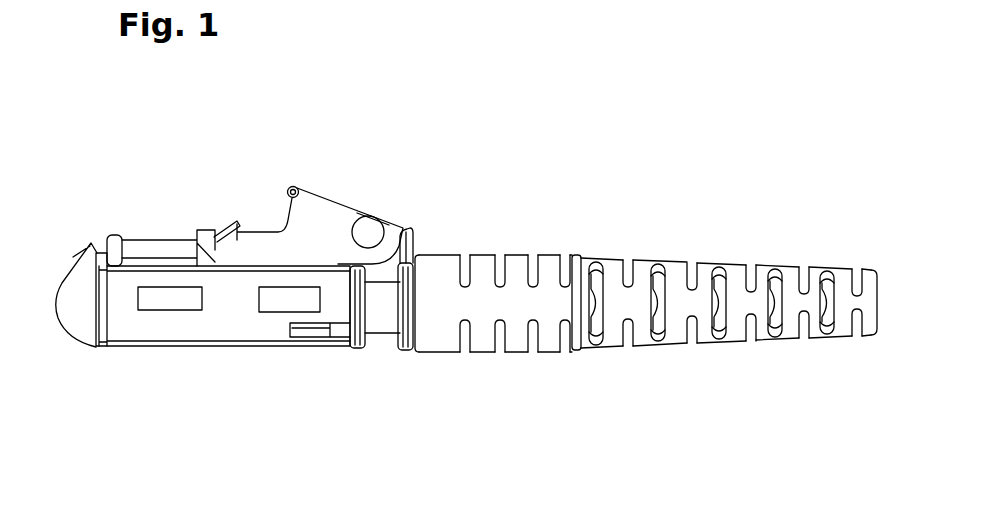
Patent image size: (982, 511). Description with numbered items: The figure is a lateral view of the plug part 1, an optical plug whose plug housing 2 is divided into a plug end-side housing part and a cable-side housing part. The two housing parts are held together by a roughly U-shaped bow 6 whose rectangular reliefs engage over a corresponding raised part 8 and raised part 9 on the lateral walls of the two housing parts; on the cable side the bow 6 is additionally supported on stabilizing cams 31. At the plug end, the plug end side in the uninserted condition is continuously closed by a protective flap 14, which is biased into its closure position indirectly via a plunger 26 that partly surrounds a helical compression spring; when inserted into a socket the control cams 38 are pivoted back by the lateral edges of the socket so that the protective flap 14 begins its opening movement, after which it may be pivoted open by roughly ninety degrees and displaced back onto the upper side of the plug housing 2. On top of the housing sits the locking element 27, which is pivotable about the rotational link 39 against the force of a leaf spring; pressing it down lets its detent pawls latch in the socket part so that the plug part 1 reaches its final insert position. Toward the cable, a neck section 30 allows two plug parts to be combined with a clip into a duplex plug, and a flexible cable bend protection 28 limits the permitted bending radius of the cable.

The plug part 1 is at (369, 123).
The plug housing 2 is at (270, 418).
The bow 6 is at (222, 324).
The raised part 8 is at (153, 301).
The raised part 9 is at (275, 301).
The protective flap 14 is at (86, 323).
The plunger 26 is at (165, 243).
The locking element 27 is at (316, 203).
The cable bend protection 28 is at (545, 264).
The neck section 30 is at (384, 324).
The stabilizing cam 31 is at (313, 334).
The control cam 38 is at (115, 241).
The rotational link 39 is at (370, 227).